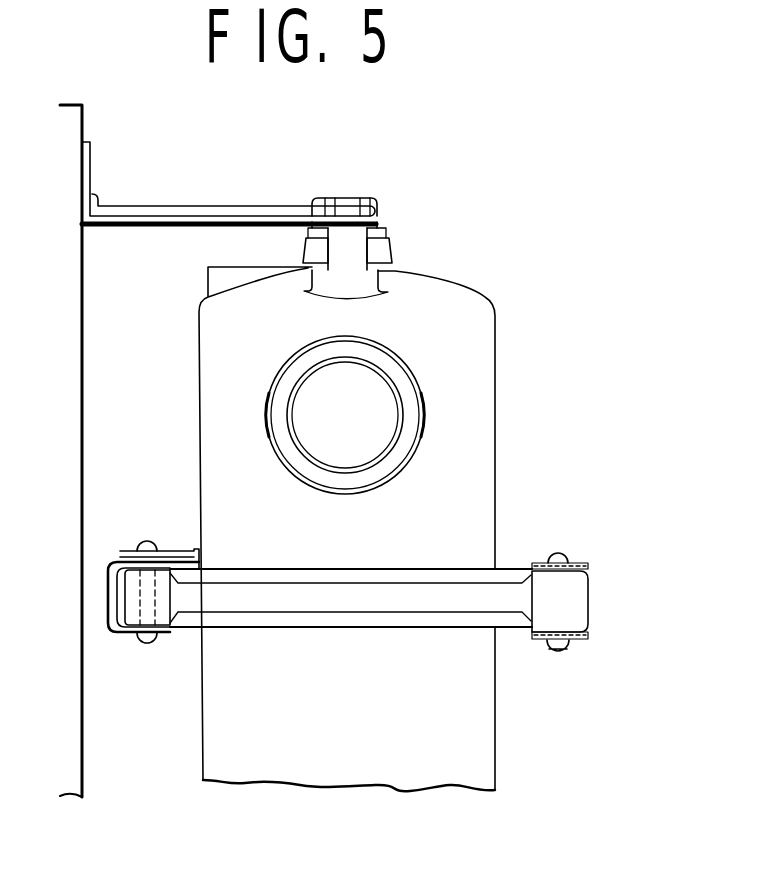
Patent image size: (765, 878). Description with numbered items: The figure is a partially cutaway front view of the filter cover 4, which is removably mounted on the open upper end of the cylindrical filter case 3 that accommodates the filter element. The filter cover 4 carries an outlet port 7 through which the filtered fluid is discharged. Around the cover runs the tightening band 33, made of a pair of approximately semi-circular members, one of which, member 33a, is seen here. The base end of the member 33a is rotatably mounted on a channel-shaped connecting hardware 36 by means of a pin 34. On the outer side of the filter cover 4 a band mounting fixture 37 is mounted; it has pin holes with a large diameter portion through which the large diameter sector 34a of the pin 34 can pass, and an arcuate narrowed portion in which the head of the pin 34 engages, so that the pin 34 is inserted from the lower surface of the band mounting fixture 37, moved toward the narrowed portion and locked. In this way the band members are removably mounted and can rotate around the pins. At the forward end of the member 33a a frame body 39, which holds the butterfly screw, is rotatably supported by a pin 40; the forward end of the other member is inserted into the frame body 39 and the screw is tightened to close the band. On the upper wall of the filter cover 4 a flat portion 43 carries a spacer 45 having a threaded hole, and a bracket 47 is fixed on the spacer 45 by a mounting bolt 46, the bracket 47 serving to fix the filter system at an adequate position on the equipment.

The filter case 3 is at (512, 778).
The filter cover 4 is at (510, 358).
The outlet port 7 is at (363, 445).
The tightening band 33 is at (598, 592).
The member 33a is at (241, 601).
The pin 34 is at (137, 600).
The large diameter sector 34a is at (147, 542).
The channel-shaped connecting hardware 36 is at (118, 636).
The band mounting fixture 37 is at (181, 551).
The frame body 39 is at (588, 636).
The pin 40 is at (558, 650).
The flat portion 43 is at (347, 272).
The spacer 45 is at (350, 252).
The mounting bolt 46 is at (343, 198).
The bracket 47 is at (213, 205).